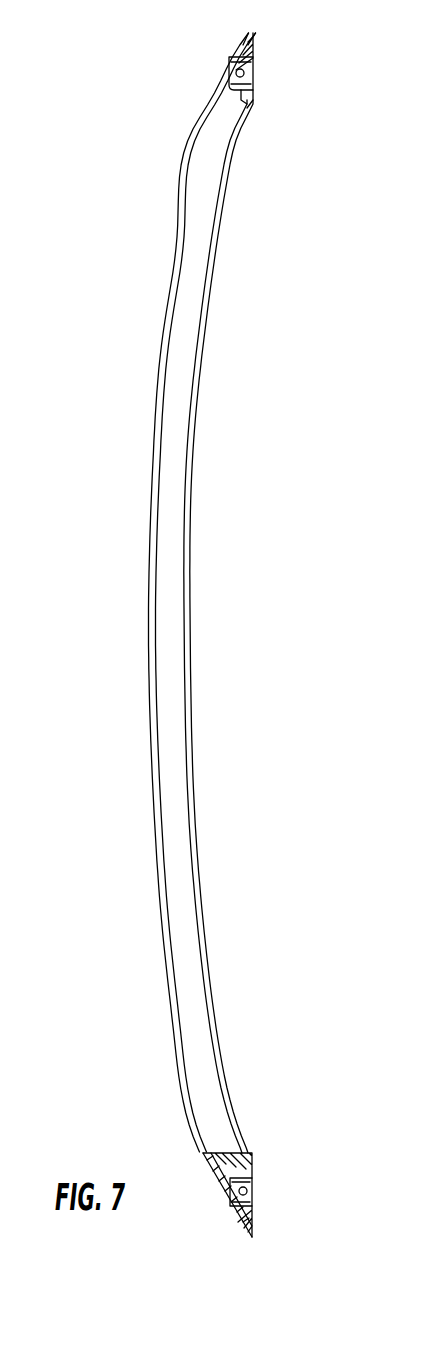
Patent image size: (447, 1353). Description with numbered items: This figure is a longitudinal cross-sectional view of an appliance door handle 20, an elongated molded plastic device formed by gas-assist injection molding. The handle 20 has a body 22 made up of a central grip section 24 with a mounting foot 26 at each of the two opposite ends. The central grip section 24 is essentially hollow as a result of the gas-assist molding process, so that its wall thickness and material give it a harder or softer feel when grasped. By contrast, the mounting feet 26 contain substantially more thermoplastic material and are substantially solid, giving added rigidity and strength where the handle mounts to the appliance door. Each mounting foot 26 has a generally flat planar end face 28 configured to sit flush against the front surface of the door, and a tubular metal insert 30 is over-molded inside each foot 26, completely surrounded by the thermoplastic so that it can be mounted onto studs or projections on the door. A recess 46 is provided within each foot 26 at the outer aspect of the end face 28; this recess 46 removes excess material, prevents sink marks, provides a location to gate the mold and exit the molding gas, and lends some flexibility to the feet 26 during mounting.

The handle 20 is at (310, 381).
The body 22 is at (193, 508).
The central grip section 24 is at (153, 556).
The mounting foot 26 is at (213, 95).
The end face 28 is at (254, 100).
The tubular metal insert 30 is at (250, 76).
The recess 46 is at (255, 43).